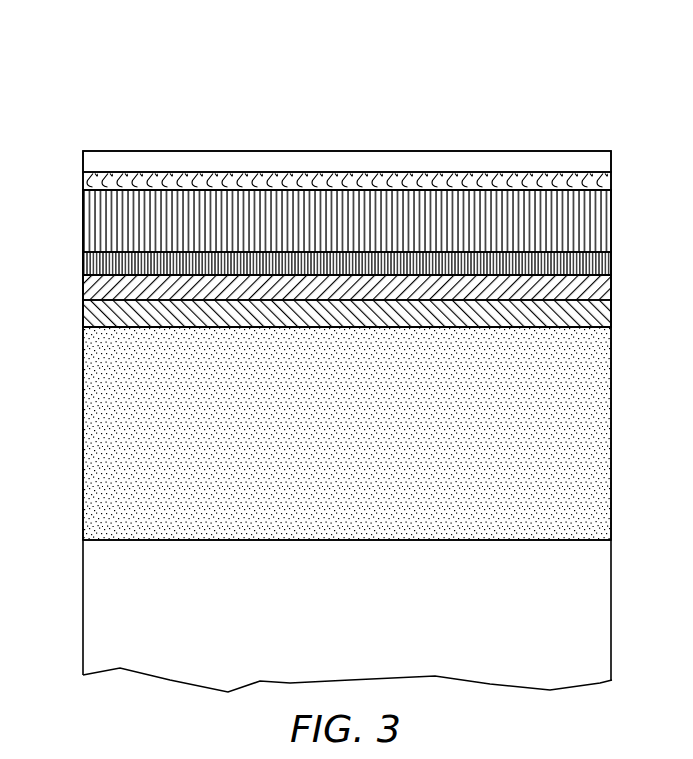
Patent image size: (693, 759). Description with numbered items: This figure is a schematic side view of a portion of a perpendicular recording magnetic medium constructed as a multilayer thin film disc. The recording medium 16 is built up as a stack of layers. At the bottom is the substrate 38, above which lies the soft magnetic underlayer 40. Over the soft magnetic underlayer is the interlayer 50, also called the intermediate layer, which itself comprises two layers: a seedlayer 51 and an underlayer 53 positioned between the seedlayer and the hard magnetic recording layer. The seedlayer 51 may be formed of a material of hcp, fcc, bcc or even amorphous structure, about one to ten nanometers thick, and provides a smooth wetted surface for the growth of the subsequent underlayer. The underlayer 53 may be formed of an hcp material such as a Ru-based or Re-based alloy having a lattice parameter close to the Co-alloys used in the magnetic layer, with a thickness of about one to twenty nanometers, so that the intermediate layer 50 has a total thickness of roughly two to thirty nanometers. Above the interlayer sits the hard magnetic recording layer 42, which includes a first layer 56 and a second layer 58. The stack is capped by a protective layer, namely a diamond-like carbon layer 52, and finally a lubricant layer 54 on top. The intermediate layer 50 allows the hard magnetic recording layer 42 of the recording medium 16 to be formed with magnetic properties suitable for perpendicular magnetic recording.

The recording medium 16 is at (271, 116).
The substrate 38 is at (598, 605).
The soft magnetic underlayer 40 is at (602, 453).
The hard magnetic recording layer 42 is at (71, 190).
The interlayer 50 is at (618, 280).
The seedlayer 51 is at (89, 317).
The diamond-like carbon layer 52 is at (612, 184).
The underlayer 53 is at (89, 290).
The lubricant layer 54 is at (605, 164).
The first layer 56 is at (603, 265).
The second layer 58 is at (595, 227).